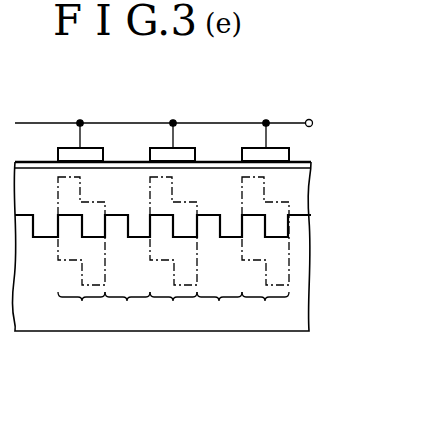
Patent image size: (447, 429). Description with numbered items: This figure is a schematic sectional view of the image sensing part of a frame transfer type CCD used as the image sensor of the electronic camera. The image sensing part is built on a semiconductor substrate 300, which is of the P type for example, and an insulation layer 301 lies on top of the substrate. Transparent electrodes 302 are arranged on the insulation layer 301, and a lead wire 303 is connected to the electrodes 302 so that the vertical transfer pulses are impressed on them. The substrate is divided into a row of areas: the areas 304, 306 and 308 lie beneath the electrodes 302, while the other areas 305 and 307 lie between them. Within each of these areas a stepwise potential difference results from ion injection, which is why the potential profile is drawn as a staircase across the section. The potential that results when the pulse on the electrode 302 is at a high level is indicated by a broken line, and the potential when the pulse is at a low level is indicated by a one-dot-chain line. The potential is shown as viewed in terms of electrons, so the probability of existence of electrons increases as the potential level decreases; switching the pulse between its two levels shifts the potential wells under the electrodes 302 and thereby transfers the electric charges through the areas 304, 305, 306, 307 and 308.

The semiconductor substrate 300 is at (306, 247).
The insulation layer 301 is at (306, 162).
The transparent electrodes 302 is at (247, 147).
The lead wire 303 is at (309, 120).
The area 304 is at (81, 253).
The area 305 is at (127, 311).
The area 306 is at (173, 253).
The area 307 is at (219, 311).
The area 308 is at (265, 253).